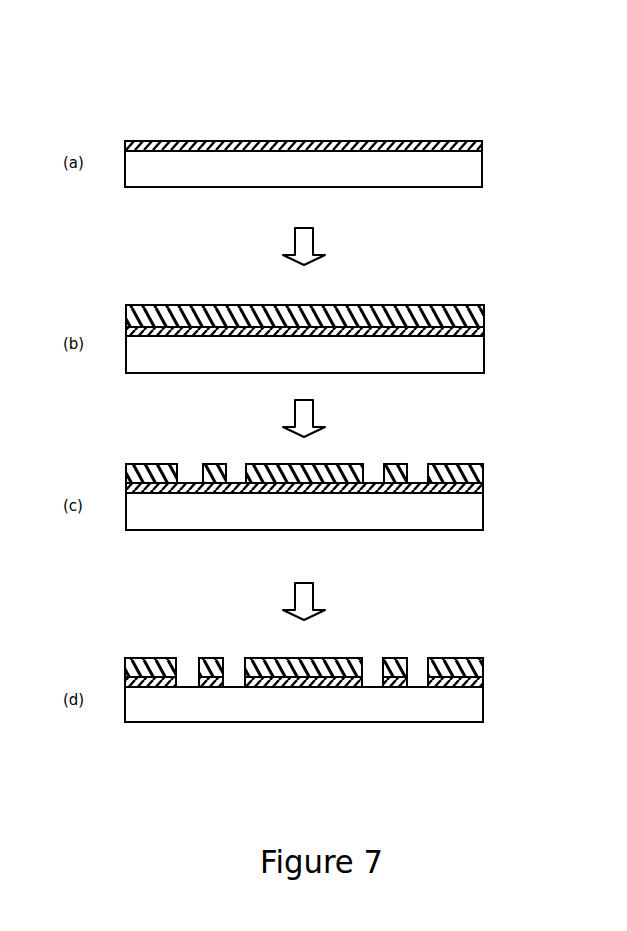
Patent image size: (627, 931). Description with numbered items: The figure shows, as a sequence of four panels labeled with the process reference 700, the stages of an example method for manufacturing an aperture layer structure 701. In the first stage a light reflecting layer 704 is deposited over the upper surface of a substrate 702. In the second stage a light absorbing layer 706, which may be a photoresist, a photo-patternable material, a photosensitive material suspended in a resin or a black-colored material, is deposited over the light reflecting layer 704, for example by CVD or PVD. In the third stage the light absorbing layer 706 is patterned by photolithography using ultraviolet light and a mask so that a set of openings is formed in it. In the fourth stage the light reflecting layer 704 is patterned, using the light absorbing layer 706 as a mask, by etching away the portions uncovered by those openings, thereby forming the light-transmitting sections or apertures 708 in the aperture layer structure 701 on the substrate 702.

The fabrication process 700 is at (52, 33).
The aperture layer structure 701 is at (95, 93).
The substrate 702 is at (470, 170).
The light reflecting layer 704 is at (482, 141).
The light absorbing layer 706 is at (484, 305).
The light-transmitting sections or apertures 708 is at (237, 656).